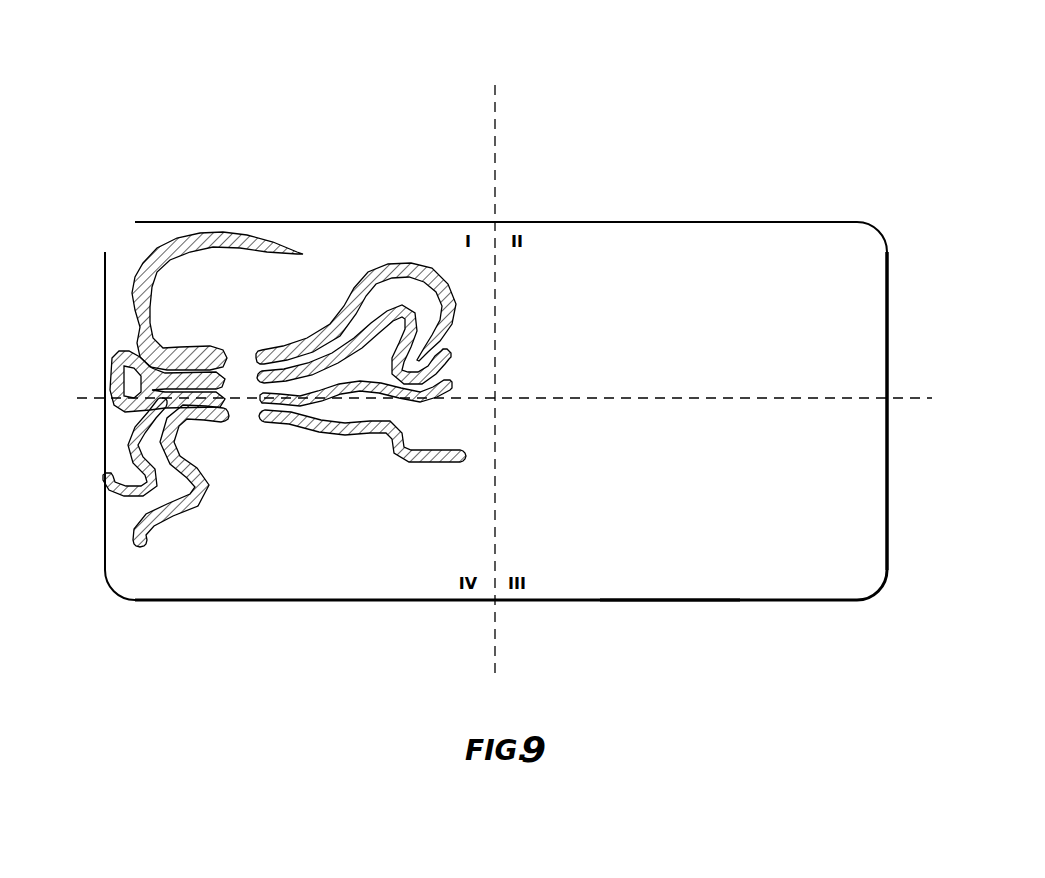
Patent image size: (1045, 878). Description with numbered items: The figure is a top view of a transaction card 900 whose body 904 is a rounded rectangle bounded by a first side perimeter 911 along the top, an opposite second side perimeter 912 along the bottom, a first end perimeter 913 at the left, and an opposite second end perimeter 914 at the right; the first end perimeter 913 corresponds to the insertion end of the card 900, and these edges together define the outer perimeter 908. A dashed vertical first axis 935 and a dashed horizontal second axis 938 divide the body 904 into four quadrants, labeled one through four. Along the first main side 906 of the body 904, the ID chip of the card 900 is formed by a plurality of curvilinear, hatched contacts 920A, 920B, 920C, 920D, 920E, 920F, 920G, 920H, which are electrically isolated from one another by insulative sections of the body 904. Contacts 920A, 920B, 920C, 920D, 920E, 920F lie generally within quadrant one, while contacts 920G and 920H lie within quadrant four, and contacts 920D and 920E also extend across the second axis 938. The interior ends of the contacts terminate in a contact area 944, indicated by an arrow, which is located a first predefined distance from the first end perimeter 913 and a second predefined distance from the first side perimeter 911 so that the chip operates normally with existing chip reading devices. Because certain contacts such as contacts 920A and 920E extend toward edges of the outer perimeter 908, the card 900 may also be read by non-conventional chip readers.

The card 900 is at (719, 108).
The body 904 is at (760, 216).
The first main side 906 is at (577, 563).
The outer perimeter 908 is at (813, 614).
The first side perimeter 911 is at (622, 222).
The second side perimeter 912 is at (670, 603).
The first end perimeter 913 is at (103, 540).
The second end perimeter 914 is at (888, 518).
The first axis 935 is at (496, 120).
The second axis 938 is at (887, 398).
The contact area 944 is at (243, 415).
The contact 920A is at (233, 240).
The contact 920B is at (393, 278).
The contact 920C is at (287, 367).
The contact 920D is at (448, 386).
The contact 920E is at (140, 447).
The contact 920F is at (118, 362).
The contact 920G is at (398, 460).
The contact 920H is at (180, 505).